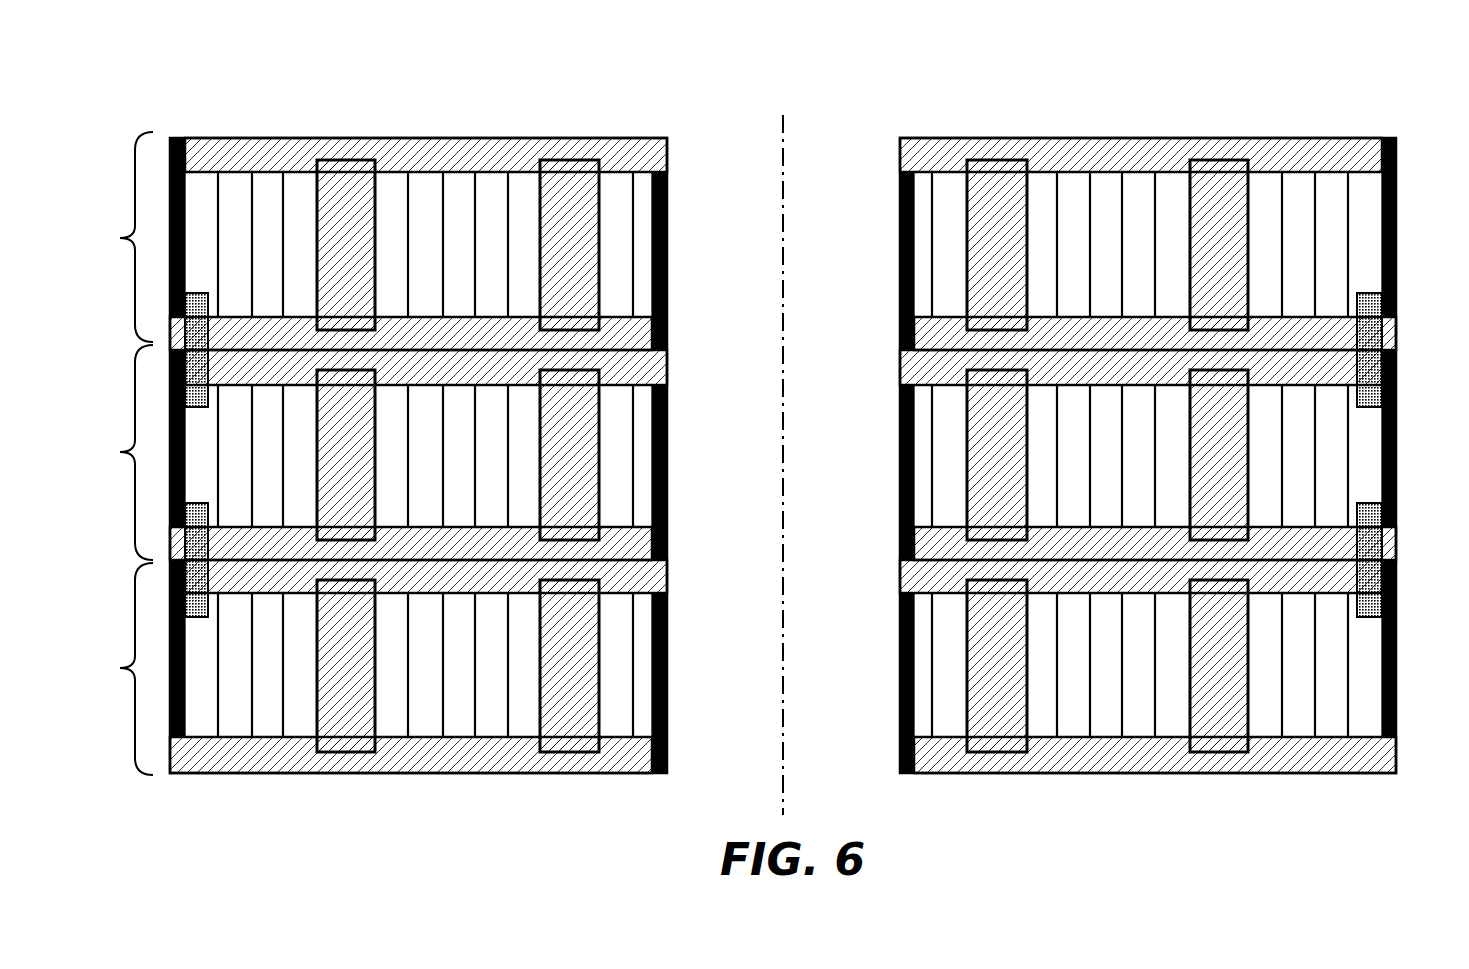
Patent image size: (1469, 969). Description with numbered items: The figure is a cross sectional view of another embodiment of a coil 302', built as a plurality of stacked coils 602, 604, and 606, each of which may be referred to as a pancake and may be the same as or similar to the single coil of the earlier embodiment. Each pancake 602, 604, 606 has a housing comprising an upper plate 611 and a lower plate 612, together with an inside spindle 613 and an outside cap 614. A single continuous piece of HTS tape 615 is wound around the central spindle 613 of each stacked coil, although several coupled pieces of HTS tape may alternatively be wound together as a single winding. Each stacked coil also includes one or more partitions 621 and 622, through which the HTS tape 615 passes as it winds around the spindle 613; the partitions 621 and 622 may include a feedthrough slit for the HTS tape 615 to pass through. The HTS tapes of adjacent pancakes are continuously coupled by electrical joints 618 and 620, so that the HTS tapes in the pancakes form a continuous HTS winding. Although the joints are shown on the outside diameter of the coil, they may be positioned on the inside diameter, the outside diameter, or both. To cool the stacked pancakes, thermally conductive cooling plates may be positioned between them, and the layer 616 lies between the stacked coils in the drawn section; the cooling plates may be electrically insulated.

The coil 302' is at (764, 401).
The stacked coil 602 is at (113, 237).
The stacked coil 604 is at (113, 452).
The stacked coil 606 is at (113, 669).
The upper plate 611 is at (627, 152).
The lower plate 612 is at (640, 332).
The inside spindle 613 is at (668, 250).
The outside cap 614 is at (203, 296).
The HTS tape 615 is at (455, 195).
The intermediate layer 616 is at (640, 368).
The electrical joint 618 is at (1367, 399).
The electrical joint 620 is at (1367, 616).
The partition 621 is at (348, 175).
The partition 622 is at (560, 172).